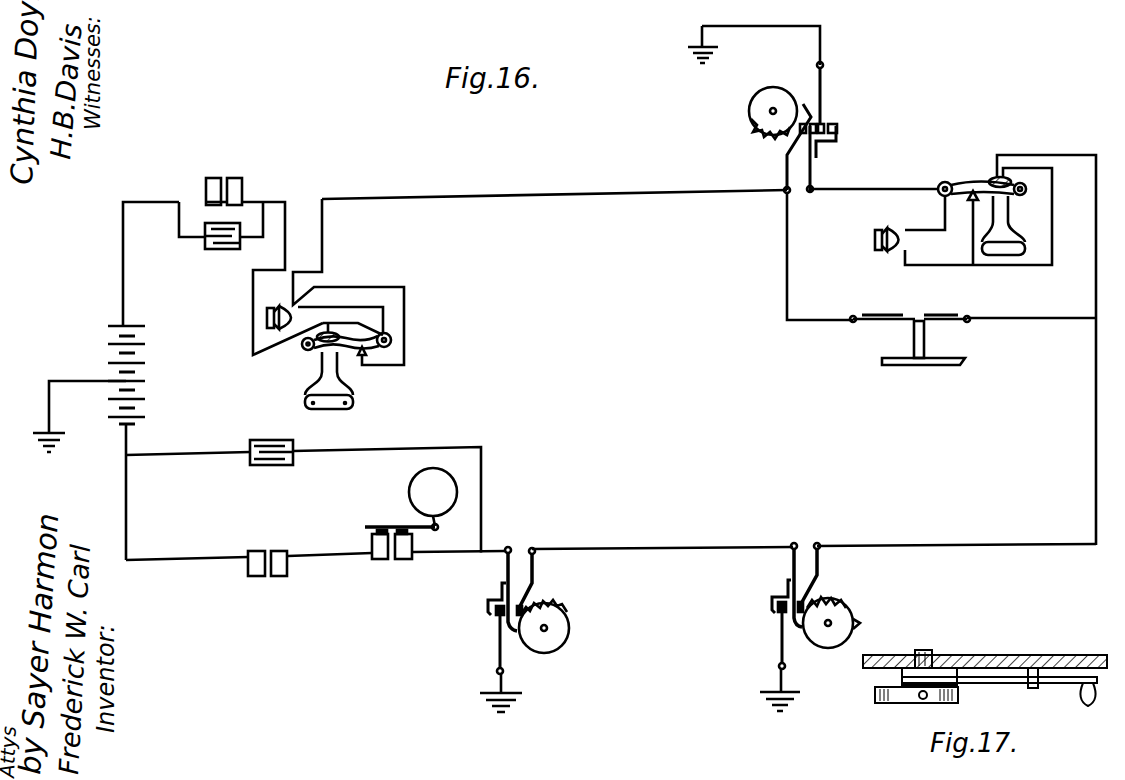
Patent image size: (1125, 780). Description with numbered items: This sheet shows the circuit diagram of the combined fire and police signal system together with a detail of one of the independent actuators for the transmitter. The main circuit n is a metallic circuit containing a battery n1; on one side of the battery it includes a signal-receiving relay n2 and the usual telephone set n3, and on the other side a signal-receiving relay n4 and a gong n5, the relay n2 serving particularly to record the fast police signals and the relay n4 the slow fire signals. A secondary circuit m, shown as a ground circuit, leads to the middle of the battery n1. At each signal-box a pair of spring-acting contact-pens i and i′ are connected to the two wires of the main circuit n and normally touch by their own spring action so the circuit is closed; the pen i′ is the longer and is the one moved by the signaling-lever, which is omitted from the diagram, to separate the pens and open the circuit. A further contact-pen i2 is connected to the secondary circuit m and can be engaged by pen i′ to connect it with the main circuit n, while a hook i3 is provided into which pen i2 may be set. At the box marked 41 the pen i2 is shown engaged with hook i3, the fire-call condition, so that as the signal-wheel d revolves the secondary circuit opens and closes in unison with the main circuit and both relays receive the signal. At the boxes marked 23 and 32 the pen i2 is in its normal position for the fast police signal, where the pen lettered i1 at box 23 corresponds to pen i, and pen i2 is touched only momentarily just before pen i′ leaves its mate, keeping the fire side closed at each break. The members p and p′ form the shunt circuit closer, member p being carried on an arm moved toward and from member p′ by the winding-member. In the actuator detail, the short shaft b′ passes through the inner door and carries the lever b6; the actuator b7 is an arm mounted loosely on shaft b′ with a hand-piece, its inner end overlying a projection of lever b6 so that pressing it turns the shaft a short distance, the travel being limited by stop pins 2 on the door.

In FIG. 16, the main circuit n is at (691, 547).
In FIG. 16, the battery n1 is at (141, 443).
In FIG. 16, the signal-receiving relay n2 is at (240, 186).
In FIG. 16, the telephone set n3 is at (346, 304).
In FIG. 16, the signal-receiving relay n4 is at (274, 579).
In FIG. 16, the gong n5 is at (393, 560).
In FIG. 16, the secondary circuit m is at (758, 36).
In FIG. 16, the contact-pen i is at (828, 572).
In FIG. 16, the contact-pen i′ is at (790, 566).
In FIG. 16, the switch contact bar i1 is at (505, 572).
In FIG. 16, the contact-pen i2 is at (780, 640).
In FIG. 16, the hook i3 is at (772, 600).
In FIG. 16, the disk d is at (571, 629).
In FIG. 16, the box 23 is at (562, 622).
In FIG. 16, the box 32 is at (770, 93).
In FIG. 16, the box 41 is at (846, 608).
In FIG. 16, the shunt circuit closer member p is at (874, 317).
In FIG. 16, the shunt circuit closer member p′ is at (938, 317).
In FIG. 17, the stop pins 2 is at (1012, 664).
In FIG. 17, the short shaft b′ is at (931, 649).
In FIG. 17, the lever b6 is at (918, 701).
In FIG. 17, the actuator b7 is at (1046, 690).